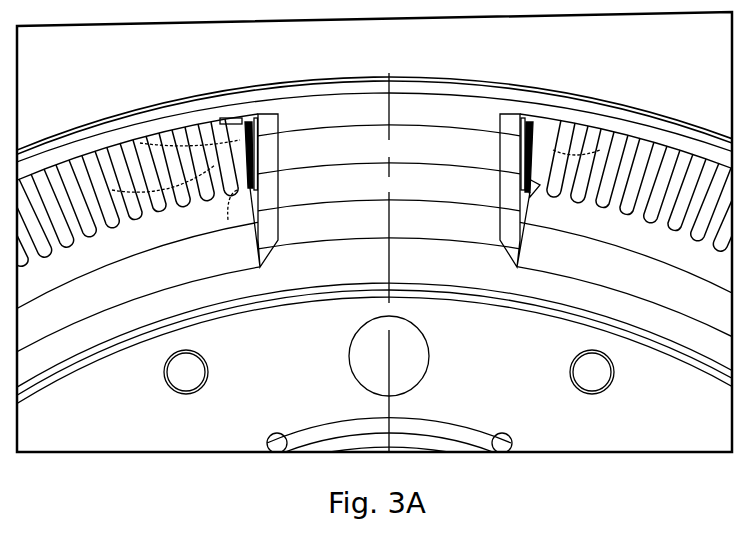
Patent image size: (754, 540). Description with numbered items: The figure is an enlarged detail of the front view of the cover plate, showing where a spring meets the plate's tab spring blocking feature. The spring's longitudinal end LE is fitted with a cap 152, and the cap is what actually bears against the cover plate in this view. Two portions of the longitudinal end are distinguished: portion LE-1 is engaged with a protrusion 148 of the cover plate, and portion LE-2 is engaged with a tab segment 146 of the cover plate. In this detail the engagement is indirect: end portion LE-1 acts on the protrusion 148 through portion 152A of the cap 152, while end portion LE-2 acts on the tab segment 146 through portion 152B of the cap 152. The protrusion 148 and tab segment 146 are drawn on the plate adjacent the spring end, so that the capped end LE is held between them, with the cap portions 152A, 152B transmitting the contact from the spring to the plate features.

The tab segment 146 is at (358, 110).
The protrusion 148 is at (318, 180).
The cap 152 is at (148, 150).
The portion of cap 152A is at (262, 183).
The portion of cap 152B is at (249, 150).
The longitudinal end LE is at (112, 190).
The portion of longitudinal end LE-1 is at (228, 220).
The portion of longitudinal end LE-2 is at (205, 123).